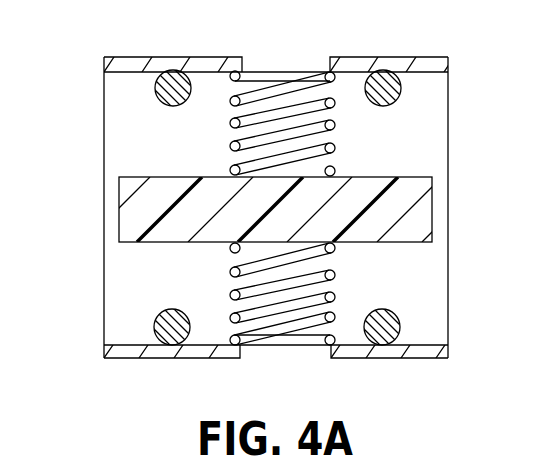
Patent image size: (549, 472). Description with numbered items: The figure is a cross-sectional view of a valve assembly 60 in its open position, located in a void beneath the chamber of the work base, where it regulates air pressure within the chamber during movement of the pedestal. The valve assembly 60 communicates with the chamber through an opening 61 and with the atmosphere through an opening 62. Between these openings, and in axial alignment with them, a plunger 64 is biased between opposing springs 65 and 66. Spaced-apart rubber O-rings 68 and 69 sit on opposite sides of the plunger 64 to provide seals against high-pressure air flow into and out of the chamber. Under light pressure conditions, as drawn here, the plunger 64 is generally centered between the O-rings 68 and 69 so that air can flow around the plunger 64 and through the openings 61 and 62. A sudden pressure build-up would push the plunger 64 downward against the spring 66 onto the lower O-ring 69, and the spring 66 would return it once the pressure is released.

The valve assembly 60 is at (82, 137).
The opening 61 is at (330, 71).
The opening 62 is at (240, 352).
The plunger 64 is at (410, 190).
The spring 65 is at (334, 148).
The spring 66 is at (337, 292).
The O-ring 68 is at (158, 99).
The O-ring 69 is at (158, 314).